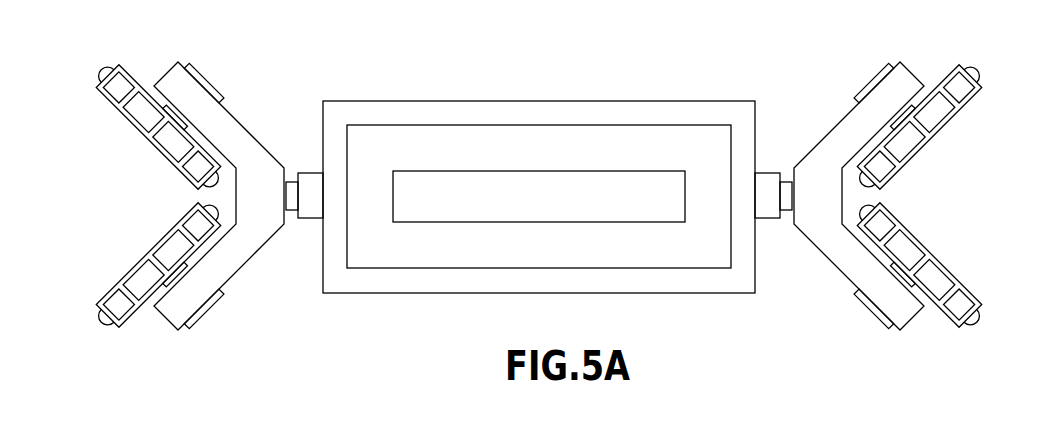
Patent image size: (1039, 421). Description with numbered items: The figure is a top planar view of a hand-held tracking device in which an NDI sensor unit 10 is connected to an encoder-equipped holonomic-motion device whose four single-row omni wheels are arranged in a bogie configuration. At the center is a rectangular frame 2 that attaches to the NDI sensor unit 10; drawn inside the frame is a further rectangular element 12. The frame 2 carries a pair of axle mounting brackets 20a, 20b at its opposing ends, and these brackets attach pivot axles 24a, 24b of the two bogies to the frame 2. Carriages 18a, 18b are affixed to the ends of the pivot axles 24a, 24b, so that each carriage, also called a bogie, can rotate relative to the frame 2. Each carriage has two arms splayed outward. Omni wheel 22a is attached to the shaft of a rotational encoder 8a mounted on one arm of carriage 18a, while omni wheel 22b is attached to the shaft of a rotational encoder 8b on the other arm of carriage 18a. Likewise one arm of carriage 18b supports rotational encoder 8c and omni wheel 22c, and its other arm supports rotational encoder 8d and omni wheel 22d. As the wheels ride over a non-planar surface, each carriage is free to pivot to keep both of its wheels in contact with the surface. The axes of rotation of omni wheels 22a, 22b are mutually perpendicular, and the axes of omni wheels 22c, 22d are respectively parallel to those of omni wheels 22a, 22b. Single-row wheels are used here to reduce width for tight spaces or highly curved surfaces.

The rectangular frame 2 is at (697, 101).
The NDI sensor unit 10 is at (571, 123).
The circuit board 12 is at (497, 170).
The carriage 18a is at (851, 281).
The carriage 18b is at (251, 259).
The axle mounting bracket 20a is at (764, 173).
The axle mounting bracket 20b is at (311, 218).
The omni wheel 22a is at (937, 137).
The omni wheel 22b is at (939, 253).
The omni wheel 22c is at (141, 132).
The omni wheel 22d is at (141, 253).
The pivot axle 24a is at (787, 212).
The pivot axle 24b is at (292, 182).
The rotational encoder 8a is at (867, 89).
The rotational encoder 8b is at (878, 318).
The rotational encoder 8c is at (200, 83).
The rotational encoder 8d is at (202, 317).